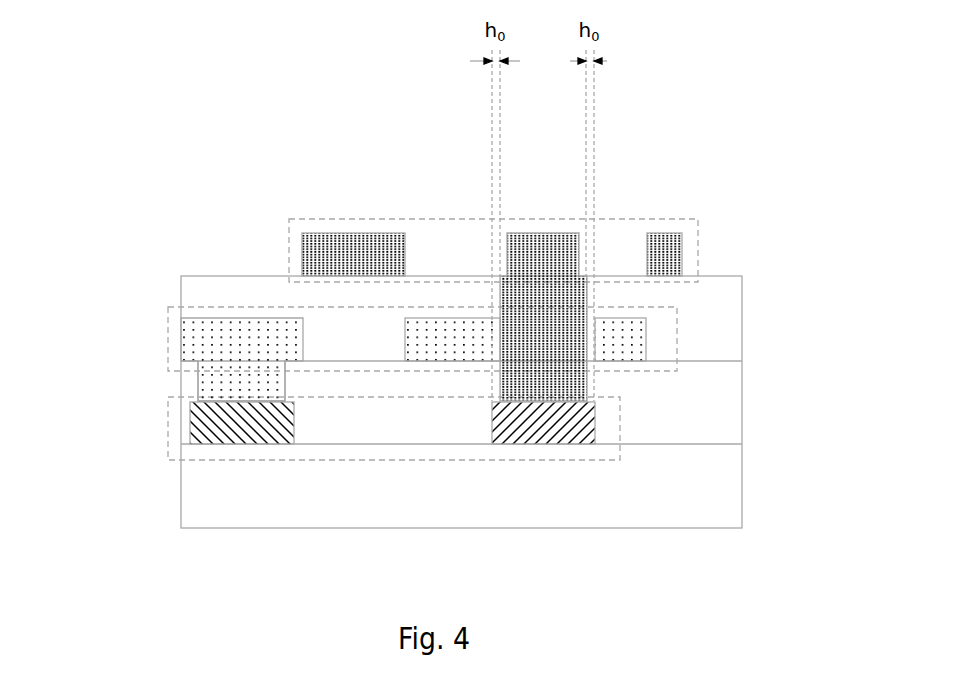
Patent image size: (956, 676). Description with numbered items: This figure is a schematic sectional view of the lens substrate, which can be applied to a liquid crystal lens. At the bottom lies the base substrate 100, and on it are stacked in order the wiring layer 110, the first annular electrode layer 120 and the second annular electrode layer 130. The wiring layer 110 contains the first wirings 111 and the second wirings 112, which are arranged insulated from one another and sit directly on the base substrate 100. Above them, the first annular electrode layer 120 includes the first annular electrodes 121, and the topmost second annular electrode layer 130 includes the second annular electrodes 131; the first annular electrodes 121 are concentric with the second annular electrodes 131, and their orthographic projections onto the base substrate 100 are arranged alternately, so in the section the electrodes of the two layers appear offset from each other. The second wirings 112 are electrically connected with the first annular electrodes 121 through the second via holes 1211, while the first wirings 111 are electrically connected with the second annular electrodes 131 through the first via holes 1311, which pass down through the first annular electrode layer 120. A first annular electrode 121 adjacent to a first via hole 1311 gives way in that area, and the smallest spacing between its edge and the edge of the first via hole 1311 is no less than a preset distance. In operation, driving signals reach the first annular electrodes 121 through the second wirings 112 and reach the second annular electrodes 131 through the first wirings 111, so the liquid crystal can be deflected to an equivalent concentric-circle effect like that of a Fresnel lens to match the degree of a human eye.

The base substrate 100 is at (703, 485).
The wiring layer 110 is at (169, 446).
The first wiring 111 is at (543, 423).
The second wiring 112 is at (242, 427).
The first annular electrode layer 120 is at (677, 322).
The first annular electrode 121 is at (208, 343).
The second via hole 1211 is at (237, 390).
The second annular electrode layer 130 is at (602, 219).
The second annular electrode 131 is at (353, 233).
The first via hole 1311 is at (548, 336).